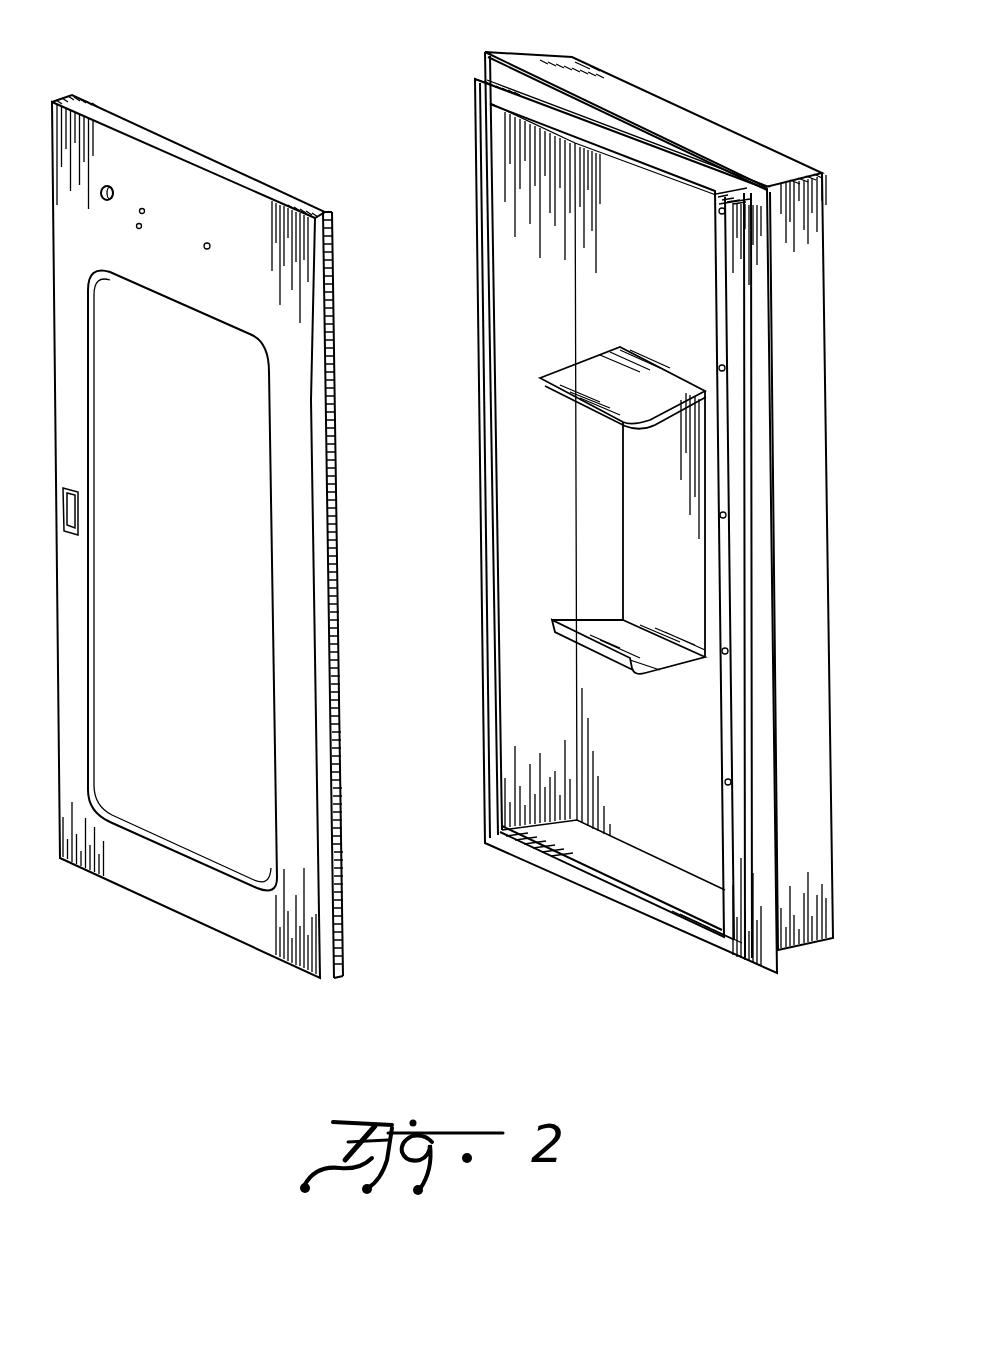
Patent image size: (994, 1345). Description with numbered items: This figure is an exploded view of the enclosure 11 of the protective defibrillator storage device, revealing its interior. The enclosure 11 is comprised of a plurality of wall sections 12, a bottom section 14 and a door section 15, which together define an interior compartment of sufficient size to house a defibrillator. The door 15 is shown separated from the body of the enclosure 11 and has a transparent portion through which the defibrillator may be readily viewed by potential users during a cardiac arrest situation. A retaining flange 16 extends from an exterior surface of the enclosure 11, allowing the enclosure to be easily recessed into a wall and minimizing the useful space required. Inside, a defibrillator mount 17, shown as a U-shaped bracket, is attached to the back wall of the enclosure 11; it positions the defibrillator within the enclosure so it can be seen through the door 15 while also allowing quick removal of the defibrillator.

The enclosure 11 is at (663, 95).
The wall section 12 is at (686, 494).
The bottom section 14 is at (598, 852).
The door section 15 is at (292, 605).
The retaining flange 16 is at (690, 155).
The defibrillator mount 17 is at (622, 380).